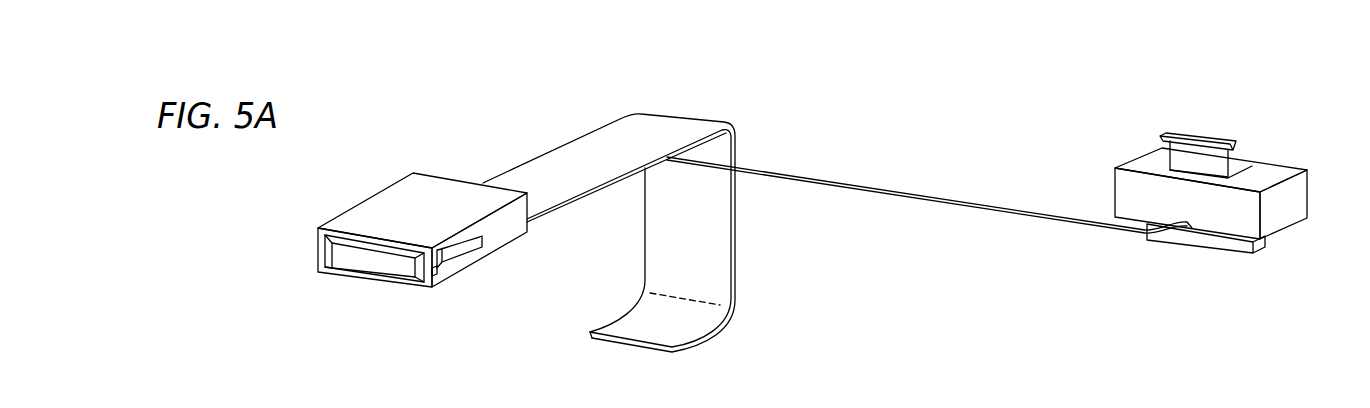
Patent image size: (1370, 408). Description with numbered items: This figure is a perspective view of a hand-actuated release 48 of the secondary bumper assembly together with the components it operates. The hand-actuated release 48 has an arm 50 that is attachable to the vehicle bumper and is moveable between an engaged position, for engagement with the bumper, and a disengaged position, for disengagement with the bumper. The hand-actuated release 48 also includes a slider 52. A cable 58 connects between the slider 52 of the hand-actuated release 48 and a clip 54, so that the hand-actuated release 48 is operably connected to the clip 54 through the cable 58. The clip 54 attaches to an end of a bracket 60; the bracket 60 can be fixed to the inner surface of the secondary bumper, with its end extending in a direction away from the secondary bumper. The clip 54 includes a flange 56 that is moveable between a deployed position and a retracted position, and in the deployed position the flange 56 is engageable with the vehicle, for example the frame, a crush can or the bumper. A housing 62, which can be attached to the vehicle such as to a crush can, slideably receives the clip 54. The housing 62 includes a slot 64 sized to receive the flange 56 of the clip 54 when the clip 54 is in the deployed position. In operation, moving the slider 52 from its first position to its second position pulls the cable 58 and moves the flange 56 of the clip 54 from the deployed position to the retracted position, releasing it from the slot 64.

The hand-actuated release 48 is at (1307, 138).
The arm 50 is at (1198, 137).
The slider 52 is at (1237, 253).
The clip 54 is at (377, 262).
The flange 56 is at (467, 257).
The cable 58 is at (868, 182).
The bracket 60 is at (609, 233).
The housing 62 is at (443, 198).
The slot 64 is at (438, 275).